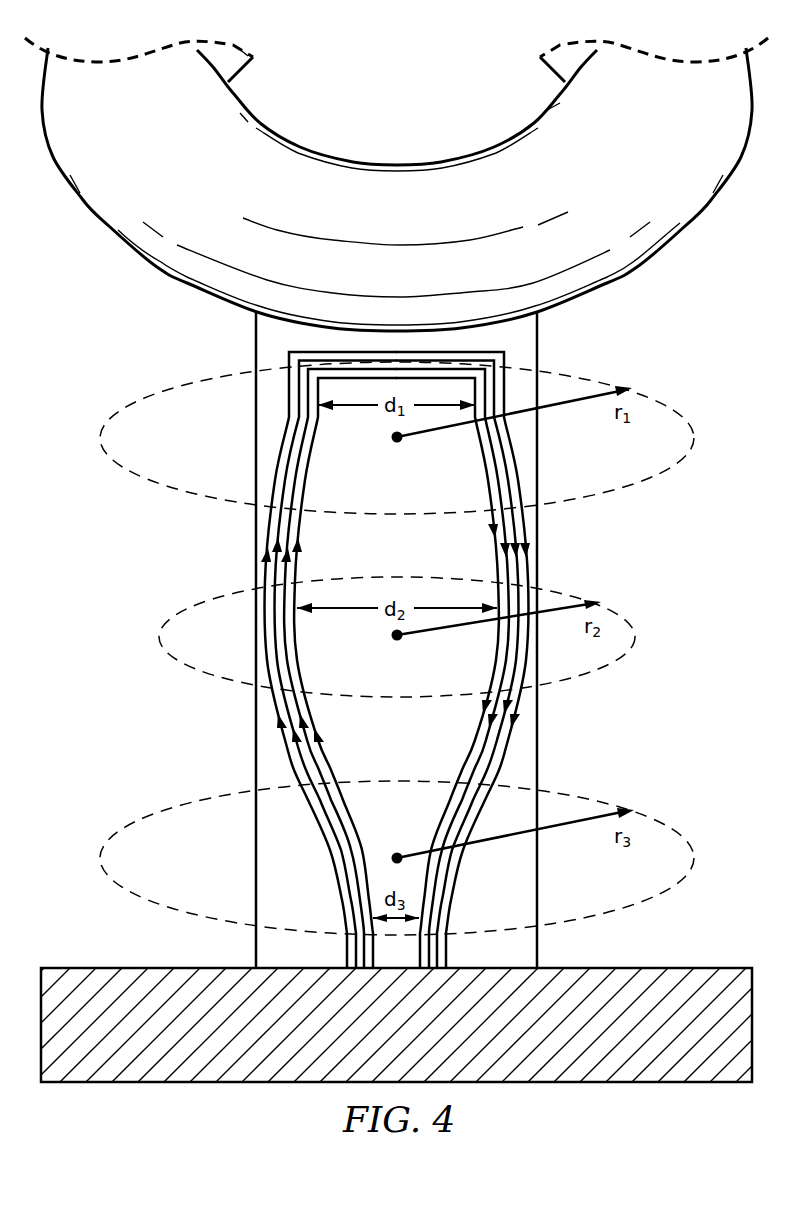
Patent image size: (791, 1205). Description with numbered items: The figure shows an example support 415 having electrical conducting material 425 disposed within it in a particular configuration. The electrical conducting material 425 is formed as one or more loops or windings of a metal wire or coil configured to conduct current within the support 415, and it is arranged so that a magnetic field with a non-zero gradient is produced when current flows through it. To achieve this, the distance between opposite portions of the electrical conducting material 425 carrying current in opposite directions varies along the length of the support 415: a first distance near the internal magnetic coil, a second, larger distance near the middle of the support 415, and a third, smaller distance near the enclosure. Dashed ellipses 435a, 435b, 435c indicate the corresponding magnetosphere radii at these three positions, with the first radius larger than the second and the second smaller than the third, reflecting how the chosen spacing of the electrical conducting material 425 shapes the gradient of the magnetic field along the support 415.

The support 415 is at (537, 333).
The electrical conducting material 425 is at (287, 435).
The first cross-sectional plane 435a is at (630, 483).
The second cross-sectional plane 435b is at (583, 673).
The third cross-sectional plane 435c is at (628, 908).